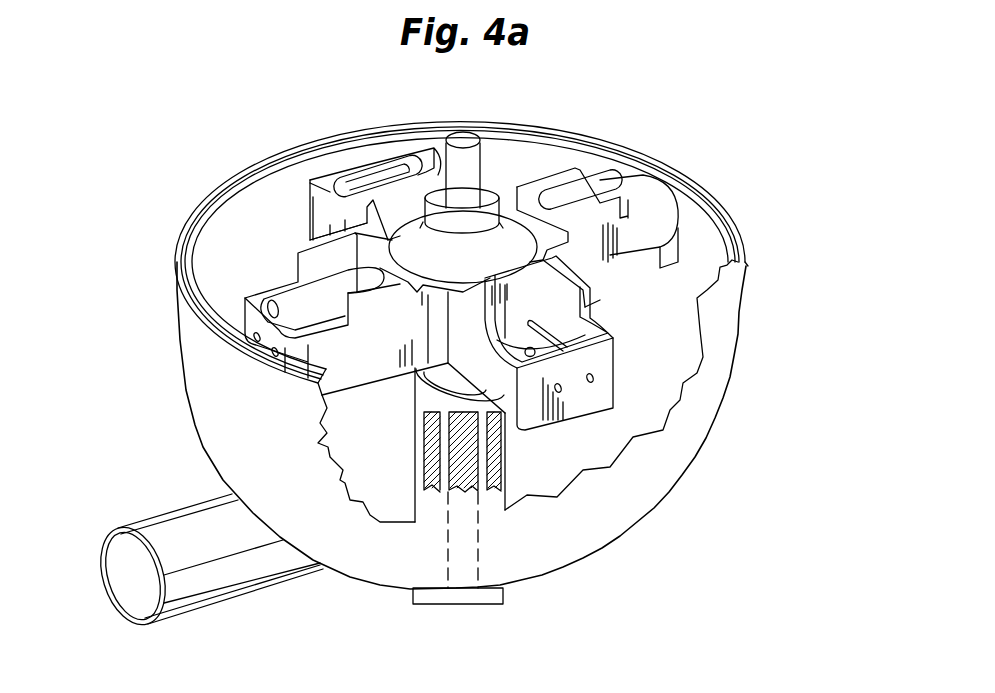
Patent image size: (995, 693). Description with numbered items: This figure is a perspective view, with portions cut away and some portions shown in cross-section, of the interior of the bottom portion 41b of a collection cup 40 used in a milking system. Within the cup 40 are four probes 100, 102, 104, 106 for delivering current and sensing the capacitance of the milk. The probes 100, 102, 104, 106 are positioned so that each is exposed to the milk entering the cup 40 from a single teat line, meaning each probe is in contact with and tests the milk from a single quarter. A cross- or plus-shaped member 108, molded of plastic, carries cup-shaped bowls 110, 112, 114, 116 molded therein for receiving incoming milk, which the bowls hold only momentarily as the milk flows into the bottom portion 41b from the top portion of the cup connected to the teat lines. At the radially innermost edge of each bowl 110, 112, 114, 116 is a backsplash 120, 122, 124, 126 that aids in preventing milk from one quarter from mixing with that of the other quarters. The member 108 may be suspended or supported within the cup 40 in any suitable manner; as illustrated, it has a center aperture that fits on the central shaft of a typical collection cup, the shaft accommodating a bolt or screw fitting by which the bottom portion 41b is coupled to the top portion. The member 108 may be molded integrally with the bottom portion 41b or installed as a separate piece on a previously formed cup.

The collection cup 40 is at (693, 225).
The bottom portion 41b is at (628, 145).
The probe 100 is at (312, 318).
The probe 102 is at (613, 338).
The probe 104 is at (690, 248).
The probe 106 is at (380, 183).
The cross- or plus-shaped member 108 is at (578, 400).
The cup-shaped bowl 110 is at (298, 285).
The cup-shaped bowl 112 is at (505, 400).
The cup-shaped bowl 114 is at (640, 232).
The cup-shaped bowl 116 is at (377, 175).
The backsplash 120 is at (380, 252).
The backsplash 122 is at (655, 305).
The backsplash 124 is at (548, 178).
The backsplash 126 is at (360, 180).